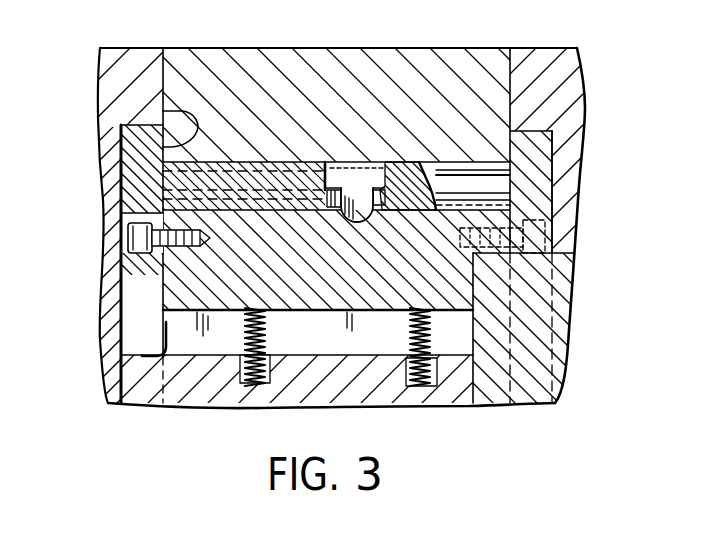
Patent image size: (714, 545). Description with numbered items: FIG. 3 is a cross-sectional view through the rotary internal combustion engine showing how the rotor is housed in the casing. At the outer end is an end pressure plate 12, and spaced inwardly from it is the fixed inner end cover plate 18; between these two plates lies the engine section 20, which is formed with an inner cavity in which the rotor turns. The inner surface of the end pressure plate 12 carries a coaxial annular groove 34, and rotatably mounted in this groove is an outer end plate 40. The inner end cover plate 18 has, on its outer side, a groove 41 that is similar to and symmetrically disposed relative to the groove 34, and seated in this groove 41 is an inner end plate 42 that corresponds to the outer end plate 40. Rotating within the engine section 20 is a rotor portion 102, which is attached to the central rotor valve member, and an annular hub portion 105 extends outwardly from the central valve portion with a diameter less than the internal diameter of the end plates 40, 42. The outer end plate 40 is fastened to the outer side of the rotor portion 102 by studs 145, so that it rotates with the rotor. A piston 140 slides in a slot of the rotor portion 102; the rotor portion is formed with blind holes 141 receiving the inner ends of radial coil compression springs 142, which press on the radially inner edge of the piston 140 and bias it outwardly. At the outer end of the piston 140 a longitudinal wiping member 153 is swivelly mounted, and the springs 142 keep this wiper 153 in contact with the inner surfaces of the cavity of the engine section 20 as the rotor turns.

The end pressure plate 12 is at (133, 57).
The engine section 20 is at (388, 68).
The inner end cover plate 18 is at (543, 62).
The annular groove 34 is at (163, 111).
The outer end plate 40 is at (113, 187).
The groove 41 is at (548, 163).
The inner end plate 42 is at (555, 199).
The rotor portion 102 is at (247, 208).
The annular hub portion 105 is at (525, 390).
The piston 140 is at (455, 292).
The blind hole 141 is at (257, 390).
The radial coil compression spring 142 is at (407, 322).
The stud 145 is at (130, 237).
The wiping member 153 is at (253, 162).